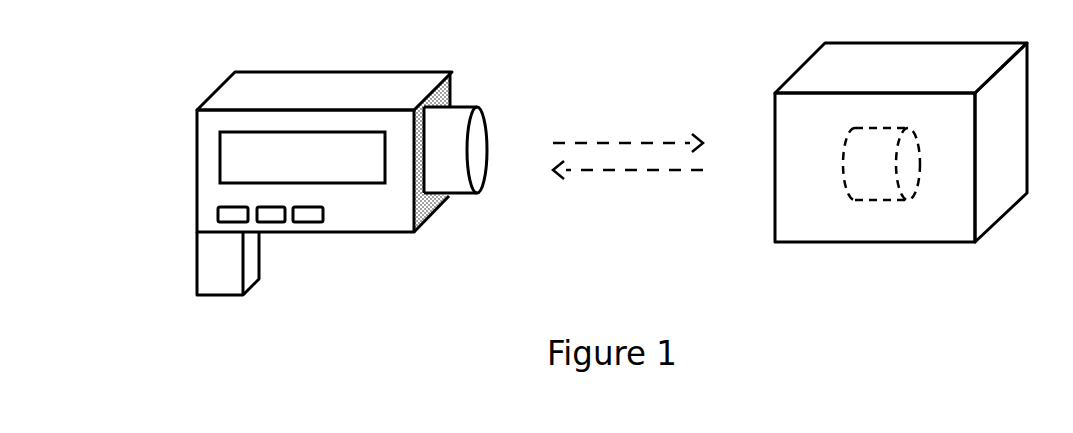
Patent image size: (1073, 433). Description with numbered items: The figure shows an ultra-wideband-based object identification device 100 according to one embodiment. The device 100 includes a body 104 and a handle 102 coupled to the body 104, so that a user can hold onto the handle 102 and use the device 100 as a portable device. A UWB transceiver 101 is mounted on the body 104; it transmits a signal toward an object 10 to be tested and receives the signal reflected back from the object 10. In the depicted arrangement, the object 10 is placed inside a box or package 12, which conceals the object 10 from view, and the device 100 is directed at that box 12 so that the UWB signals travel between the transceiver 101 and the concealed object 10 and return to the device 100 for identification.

The ultra-wideband-based object identification device 100 is at (307, 154).
The UWB transceiver 101 is at (452, 183).
The handle 102 is at (203, 258).
The body 104 is at (203, 161).
The object 10 is at (966, 83).
The box 12 is at (887, 154).